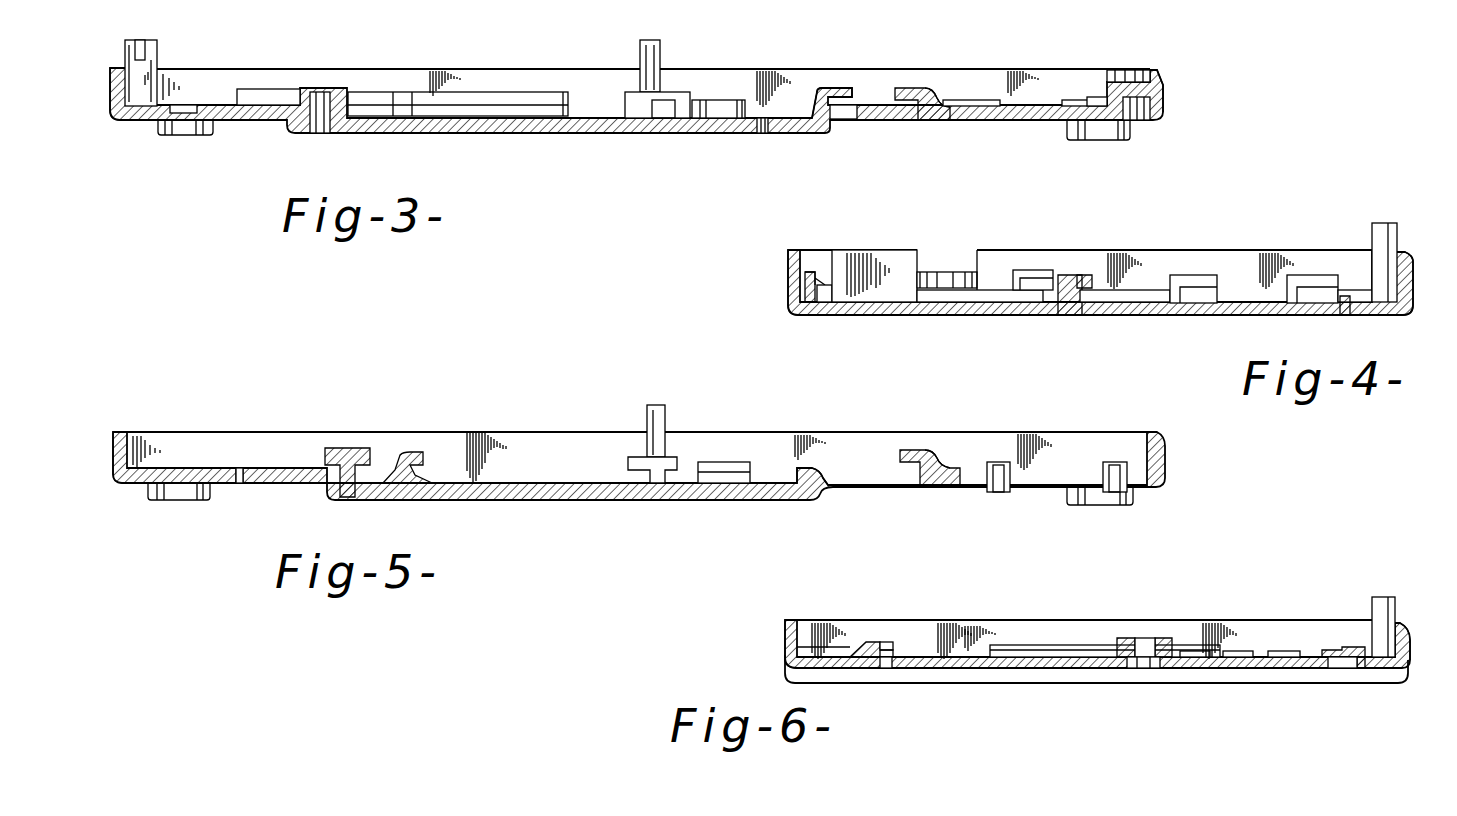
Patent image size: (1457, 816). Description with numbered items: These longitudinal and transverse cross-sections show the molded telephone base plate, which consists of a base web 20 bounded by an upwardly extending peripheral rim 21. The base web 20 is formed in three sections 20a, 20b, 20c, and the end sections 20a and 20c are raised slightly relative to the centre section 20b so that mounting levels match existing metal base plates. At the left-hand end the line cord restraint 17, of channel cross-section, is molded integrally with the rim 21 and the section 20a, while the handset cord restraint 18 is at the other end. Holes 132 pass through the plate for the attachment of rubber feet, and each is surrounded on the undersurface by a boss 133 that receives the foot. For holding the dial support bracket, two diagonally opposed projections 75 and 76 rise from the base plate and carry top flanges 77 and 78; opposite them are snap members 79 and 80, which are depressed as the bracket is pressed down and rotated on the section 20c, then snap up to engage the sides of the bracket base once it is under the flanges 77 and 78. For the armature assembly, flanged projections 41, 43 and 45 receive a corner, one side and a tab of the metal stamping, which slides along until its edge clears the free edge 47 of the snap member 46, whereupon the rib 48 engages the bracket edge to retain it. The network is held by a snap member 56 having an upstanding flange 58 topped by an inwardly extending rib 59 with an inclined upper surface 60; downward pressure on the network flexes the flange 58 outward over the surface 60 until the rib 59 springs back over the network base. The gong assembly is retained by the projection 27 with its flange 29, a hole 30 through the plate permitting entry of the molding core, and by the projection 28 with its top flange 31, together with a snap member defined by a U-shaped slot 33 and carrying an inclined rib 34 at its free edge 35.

In FIG. 3, the line cord restraint 17 is at (157, 50).
In FIG. 3, the handset cord restraint 18 is at (660, 56).
In FIG. 4, the handset cord restraint 18 is at (1383, 236).
In FIG. 5, the handset cord restraint 18 is at (647, 415).
In FIG. 6, the handset cord restraint 18 is at (1380, 612).
In FIG. 6, the base web 20 is at (1010, 670).
In FIG. 3, the end section of base web 20a is at (252, 125).
In FIG. 3, the centre section of base web 20b is at (516, 125).
In FIG. 3, the end section of base web 20c is at (1015, 120).
In FIG. 3, the peripheral rim 21 is at (110, 85).
In FIG. 4, the peripheral rim 21 is at (790, 256).
In FIG. 5, the peripheral rim 21 is at (126, 436).
In FIG. 6, the peripheral rim 21 is at (783, 632).
In FIG. 6, the projection 27 is at (860, 650).
In FIG. 6, the projection 28 is at (1355, 670).
In FIG. 6, the flange 29 is at (890, 645).
In FIG. 6, the hole 30 is at (890, 670).
In FIG. 6, the top flange 31 is at (1350, 645).
In FIG. 5, the U shaped slot 33 is at (240, 484).
In FIG. 5, the inclined rib 34 is at (236, 466).
In FIG. 5, the free edge 35 is at (243, 470).
In FIG. 4, the projection 41 is at (1084, 277).
In FIG. 4, the projection 43 is at (1195, 275).
In FIG. 4, the projection 45 is at (1300, 275).
In FIG. 4, the snap member 46 is at (1365, 318).
In FIG. 4, the free edge 47 is at (1345, 300).
In FIG. 4, the rib 48 is at (1341, 300).
In FIG. 4, the snap member 56 is at (819, 312).
In FIG. 4, the upstanding flange 58 is at (805, 290).
In FIG. 4, the inwardly extending rib 59 is at (815, 276).
In FIG. 4, the inclined upper surface 60 is at (823, 281).
In FIG. 3, the projection 75 is at (815, 88).
In FIG. 3, the projection 76 is at (928, 100).
In FIG. 5, the projection 76 is at (936, 465).
In FIG. 3, the top flange 77 is at (850, 90).
In FIG. 3, the top flange 78 is at (903, 88).
In FIG. 5, the top flange 78 is at (905, 450).
In FIG. 3, the snap member 79 is at (945, 118).
In FIG. 5, the snap member 80 is at (826, 502).
In FIG. 3, the hole 132 is at (188, 108).
In FIG. 3, the boss 133 is at (158, 136).
In FIG. 5, the boss 133 is at (192, 500).